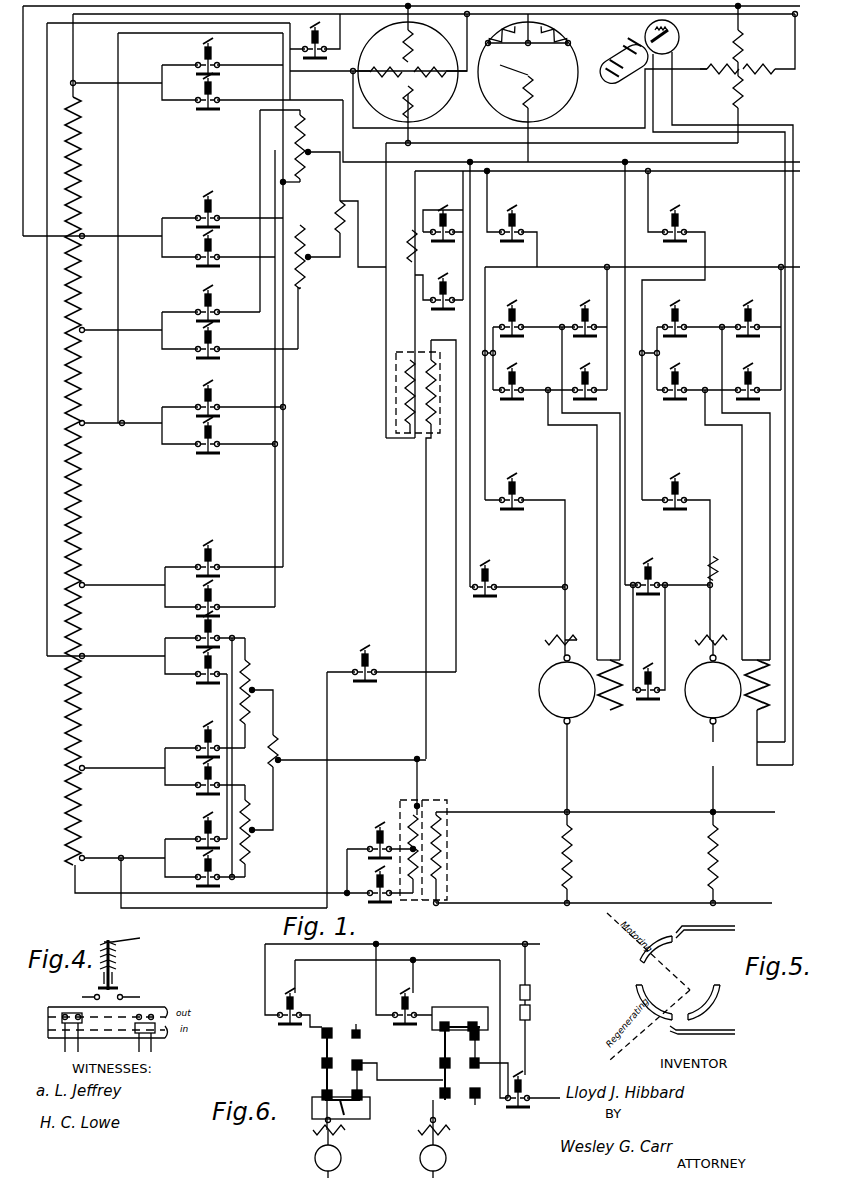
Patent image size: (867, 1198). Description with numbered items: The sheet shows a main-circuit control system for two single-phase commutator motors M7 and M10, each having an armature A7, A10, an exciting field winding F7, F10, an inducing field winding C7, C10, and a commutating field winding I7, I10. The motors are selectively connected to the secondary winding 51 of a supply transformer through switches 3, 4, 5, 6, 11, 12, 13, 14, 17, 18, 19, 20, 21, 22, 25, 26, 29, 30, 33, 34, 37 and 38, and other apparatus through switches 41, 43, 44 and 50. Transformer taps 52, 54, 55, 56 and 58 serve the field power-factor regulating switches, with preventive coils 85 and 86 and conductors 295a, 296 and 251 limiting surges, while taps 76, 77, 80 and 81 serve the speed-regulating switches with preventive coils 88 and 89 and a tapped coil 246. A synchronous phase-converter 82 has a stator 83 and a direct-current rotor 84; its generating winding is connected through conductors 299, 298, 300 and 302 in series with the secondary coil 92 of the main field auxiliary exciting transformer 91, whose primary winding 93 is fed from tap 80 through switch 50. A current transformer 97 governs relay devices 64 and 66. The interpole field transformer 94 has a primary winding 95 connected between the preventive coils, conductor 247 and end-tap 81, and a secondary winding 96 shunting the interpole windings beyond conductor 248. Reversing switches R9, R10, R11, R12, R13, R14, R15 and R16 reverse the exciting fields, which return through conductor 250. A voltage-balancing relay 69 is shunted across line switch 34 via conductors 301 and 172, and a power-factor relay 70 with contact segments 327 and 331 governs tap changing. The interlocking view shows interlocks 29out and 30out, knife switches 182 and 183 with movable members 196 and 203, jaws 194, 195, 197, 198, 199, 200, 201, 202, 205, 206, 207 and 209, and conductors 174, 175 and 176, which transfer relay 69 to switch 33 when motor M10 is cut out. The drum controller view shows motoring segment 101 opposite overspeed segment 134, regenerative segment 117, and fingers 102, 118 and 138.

In FIG. 1, the conductor 300 is at (411, 331).
In FIG. 1, the secondary winding of the supply transformer 51 is at (110, 505).
In FIG. 1, the transformer tap 52 is at (78, 81).
In FIG. 1, the transformer tap 54 is at (84, 235).
In FIG. 1, the transformer tap 55 is at (84, 329).
In FIG. 1, the transformer tap 56 is at (84, 422).
In FIG. 1, the transformer tap 58 is at (86, 585).
In FIG. 1, the transformer tap 76 is at (94, 656).
In FIG. 1, the transformer tap 77 is at (96, 768).
In FIG. 1, the transformer tap 80 is at (90, 858).
In FIG. 1, the end-tap 81 is at (84, 896).
In FIG. 1, the field power-factor regulating switch 13 is at (240, 62).
In FIG. 1, the field power-factor regulating switch 14 is at (240, 96).
In FIG. 1, the field power-factor regulating switch 17 is at (240, 214).
In FIG. 1, the field power-factor regulating switch 18 is at (240, 253).
In FIG. 1, the field power-factor regulating switch 19 is at (240, 309).
In FIG. 1, the field power-factor regulating switch 20 is at (240, 346).
In FIG. 1, the field power-factor regulating switch 21 is at (240, 403).
In FIG. 1, the field power-factor regulating switch 22 is at (240, 441).
In FIG. 1, the field power-factor regulating switch 25 is at (240, 562).
In FIG. 1, the field power-factor regulating switch 26 is at (240, 604).
In FIG. 1, the speed-regulating switch 3 is at (236, 632).
In FIG. 1, the speed-regulating switch 4 is at (186, 669).
In FIG. 1, the speed-regulating switch 5 is at (186, 738).
In FIG. 1, the speed-regulating switch 6 is at (186, 782).
In FIG. 1, the speed-regulating switch 11 is at (192, 829).
In FIG. 1, the speed-regulating switch 12 is at (192, 875).
In FIG. 1, the conductor 296 is at (260, 122).
In FIG. 1, the conductor 295a is at (275, 155).
In FIG. 1, the preventive coil 85 is at (306, 150).
In FIG. 1, the preventive coil 86 is at (306, 253).
In FIG. 1, the resistor conductor 251 is at (318, 258).
In FIG. 1, the preventive coil 88 is at (256, 688).
In FIG. 1, the preventive coil 89 is at (256, 850).
In FIG. 1, the resistor 246 is at (272, 790).
In FIG. 1, the switch 41 is at (348, 72).
In FIG. 1, the stator 83 is at (432, 46).
In FIG. 1, the rotor 84 is at (515, 35).
In FIG. 1, the phase-converter 82 is at (477, 107).
In FIG. 1, the conductor 302 is at (490, 143).
In FIG. 1, the conductor 298 is at (386, 144).
In FIG. 1, the power-factor relay 70 is at (604, 49).
In FIG. 1, the contact segment 331 is at (652, 45).
In FIG. 1, the contact segment 327 is at (620, 80).
In FIG. 1, the relay device 64 is at (440, 192).
In FIG. 1, the series or current transformer 97 is at (418, 242).
In FIG. 1, the relay device 66 is at (410, 307).
In FIG. 1, the conductor 299 is at (386, 296).
In FIG. 1, the main field auxiliary exciting transformer 91 is at (410, 345).
In FIG. 1, the secondary coil 92 is at (410, 386).
In FIG. 1, the primary winding 93 is at (431, 355).
In FIG. 1, the switch 37 is at (553, 217).
In FIG. 1, the switch 38 is at (718, 217).
In FIG. 1, the conductor 301 is at (625, 236).
In FIG. 6, the conductor 301 is at (460, 944).
In FIG. 1, the conductor 250 is at (560, 270).
In FIG. 1, the reversing switch R9 is at (527, 318).
In FIG. 1, the reversing switch R11 is at (581, 318).
In FIG. 1, the reversing switch R12 is at (523, 381).
In FIG. 1, the reversing switch R10 is at (577, 381).
In FIG. 1, the reversing switch R13 is at (689, 318).
In FIG. 1, the reversing switch R15 is at (754, 318).
In FIG. 1, the reversing switch R16 is at (689, 381).
In FIG. 1, the reversing switch R14 is at (755, 381).
In FIG. 1, the switch 29 is at (543, 497).
In FIG. 1, the switch 30 is at (708, 494).
In FIG. 1, the regenerative line switch 33 is at (516, 582).
In FIG. 4, the regenerative line switch 33 is at (133, 968).
In FIG. 6, the regenerative line switch 33 is at (296, 982).
In FIG. 1, the regenerative line switch 34 is at (680, 578).
In FIG. 6, the regenerative line switch 34 is at (410, 990).
In FIG. 1, the voltage-balancing relay 69 is at (676, 674).
In FIG. 6, the voltage-balancing relay 69 is at (524, 1078).
In FIG. 1, the compensating or inducing field winding C7 is at (541, 642).
In FIG. 6, the compensating or inducing field winding C7 is at (338, 1130).
In FIG. 1, the single-phase commutator motor M7 is at (514, 695).
In FIG. 1, the armature A7 is at (567, 689).
In FIG. 6, the armature A7 is at (328, 1154).
In FIG. 1, the main or exciting field winding F7 is at (609, 699).
In FIG. 1, the interpole or commutating field winding I7 is at (579, 815).
In FIG. 1, the compensating or inducing field winding C10 is at (700, 640).
In FIG. 6, the compensating or inducing field winding C10 is at (443, 1130).
In FIG. 1, the single-phase commutator motor M10 is at (668, 717).
In FIG. 1, the armature A10 is at (713, 689).
In FIG. 6, the armature A10 is at (436, 1154).
In FIG. 1, the main or exciting field winding F10 is at (767, 712).
In FIG. 1, the interpole or commutating field winding I10 is at (729, 731).
In FIG. 1, the normally open switch 50 is at (376, 672).
In FIG. 1, the conductor 247 is at (417, 790).
In FIG. 1, the interpole field transformer 94 is at (478, 802).
In FIG. 1, the primary winding 95 is at (406, 822).
In FIG. 1, the secondary winding 96 is at (442, 834).
In FIG. 1, the switch 43 is at (358, 840).
In FIG. 1, the switch 44 is at (358, 888).
In FIG. 1, the conductor 248 is at (440, 905).
In FIG. 6, the conductor 172 is at (447, 1012).
In FIG. 6, the interlock 29out is at (541, 974).
In FIG. 6, the interlock 30out is at (541, 1040).
In FIG. 6, the switch jaw 197 is at (327, 1023).
In FIG. 6, the switch jaw 198 is at (362, 1022).
In FIG. 6, the conductor 176 is at (327, 1044).
In FIG. 6, the switch jaw 194 is at (315, 1058).
In FIG. 6, the switch jaw 195 is at (357, 1067).
In FIG. 6, the double-pole double-throw knife switch 183 is at (398, 1048).
In FIG. 6, the double-pole double-throw knife switch 182 is at (305, 1078).
In FIG. 6, the switch jaw 199 is at (322, 1094).
In FIG. 6, the movable switch member 196 is at (347, 1087).
In FIG. 6, the switch jaw 200 is at (402, 1076).
In FIG. 6, the conductor 174 is at (373, 1092).
In FIG. 6, the conductor 175 is at (370, 1112).
In FIG. 6, the switch jaw 209 is at (434, 1033).
In FIG. 6, the movable switch element 203 is at (464, 1033).
In FIG. 6, the switch jaw 205 is at (484, 1043).
In FIG. 6, the switch jaw 202 is at (489, 1074).
In FIG. 6, the switch jaw 201 is at (435, 1061).
In FIG. 6, the switch jaw 206 is at (435, 1090).
In FIG. 6, the switch jaw 207 is at (488, 1105).
In FIG. 5, the motoring contact segment 101 is at (640, 961).
In FIG. 5, the control finger 102 is at (696, 930).
In FIG. 5, the regenerative contact segment 117 is at (638, 992).
In FIG. 5, the overspeed contact segment 134 is at (722, 995).
In FIG. 5, the regenerative control finger 118 is at (671, 1043).
In FIG. 5, the overspeed control finger 138 is at (702, 1039).